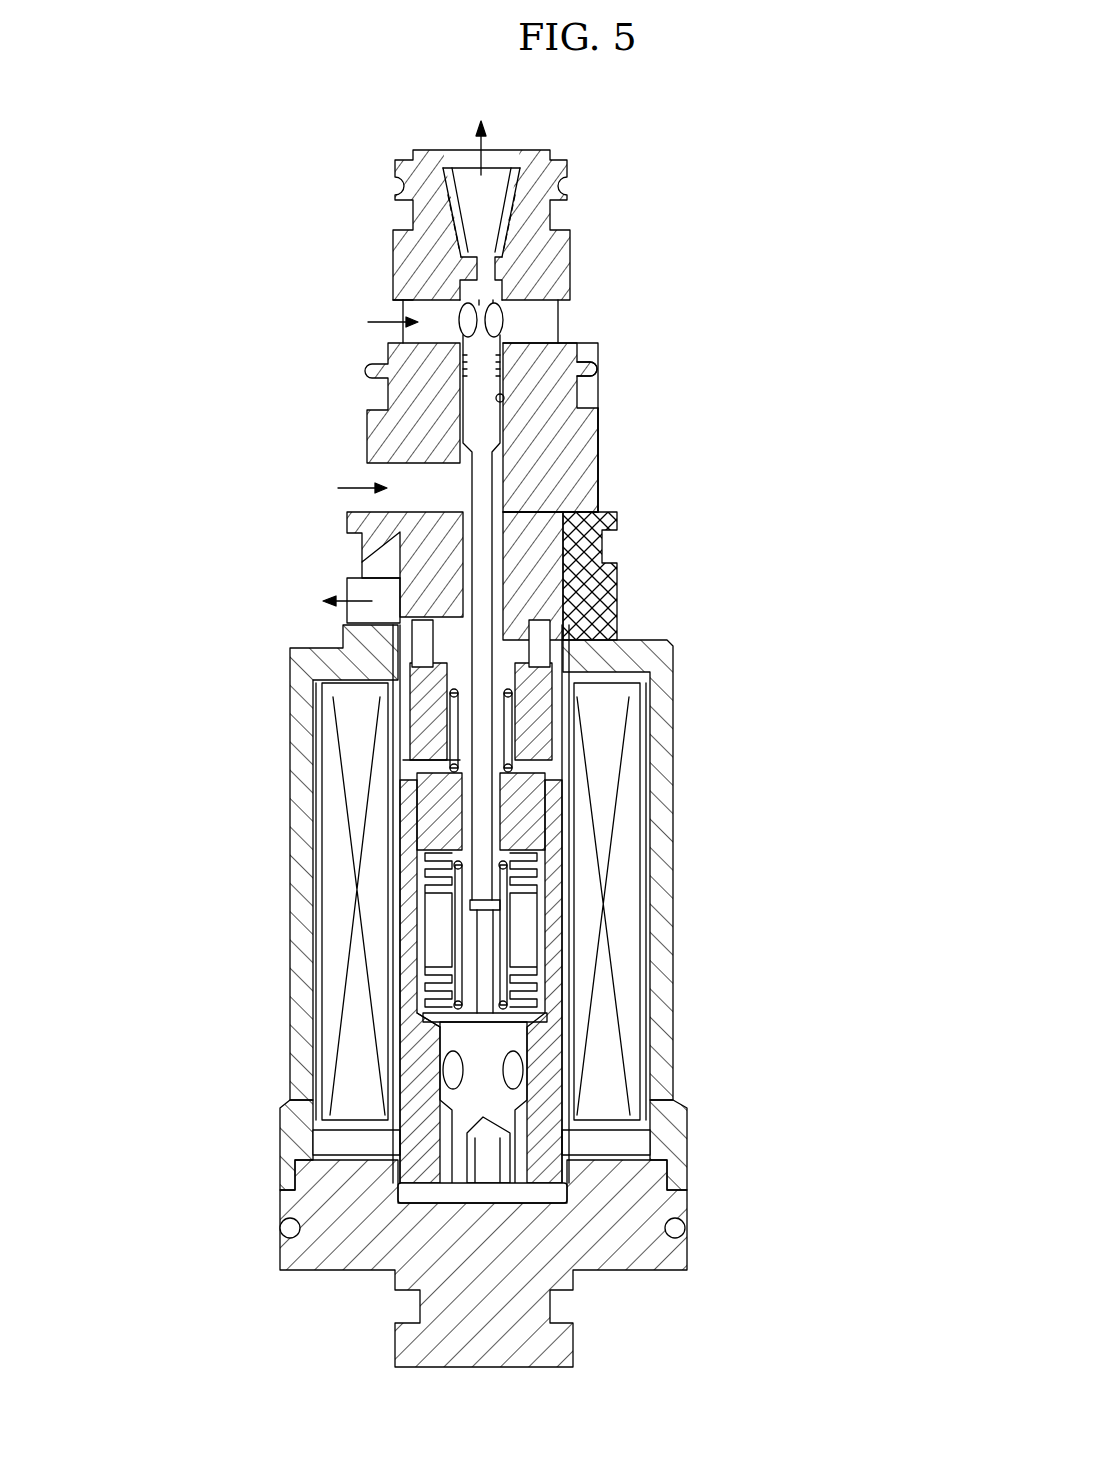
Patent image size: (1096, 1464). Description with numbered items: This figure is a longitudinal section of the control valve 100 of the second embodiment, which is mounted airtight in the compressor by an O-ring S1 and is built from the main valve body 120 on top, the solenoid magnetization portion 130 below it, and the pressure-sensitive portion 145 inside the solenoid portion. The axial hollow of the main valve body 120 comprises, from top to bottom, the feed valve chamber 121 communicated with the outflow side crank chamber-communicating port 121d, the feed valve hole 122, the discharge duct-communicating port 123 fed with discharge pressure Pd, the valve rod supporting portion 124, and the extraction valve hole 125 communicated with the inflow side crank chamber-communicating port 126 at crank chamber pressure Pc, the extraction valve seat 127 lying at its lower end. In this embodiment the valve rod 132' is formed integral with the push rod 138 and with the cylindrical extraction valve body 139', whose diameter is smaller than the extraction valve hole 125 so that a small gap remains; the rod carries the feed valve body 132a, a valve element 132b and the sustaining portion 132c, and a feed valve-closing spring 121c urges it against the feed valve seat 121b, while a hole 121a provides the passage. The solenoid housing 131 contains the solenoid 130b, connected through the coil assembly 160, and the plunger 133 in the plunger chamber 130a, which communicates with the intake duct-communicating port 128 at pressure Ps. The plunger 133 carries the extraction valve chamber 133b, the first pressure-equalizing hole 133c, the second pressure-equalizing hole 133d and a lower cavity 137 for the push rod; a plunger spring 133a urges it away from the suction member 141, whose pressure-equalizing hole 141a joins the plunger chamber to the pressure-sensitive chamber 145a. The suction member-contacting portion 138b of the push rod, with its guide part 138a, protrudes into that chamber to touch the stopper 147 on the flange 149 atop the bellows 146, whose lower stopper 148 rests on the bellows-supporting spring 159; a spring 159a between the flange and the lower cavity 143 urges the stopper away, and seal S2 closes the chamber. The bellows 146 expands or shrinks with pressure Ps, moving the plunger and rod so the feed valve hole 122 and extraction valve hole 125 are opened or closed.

The control valve 100 is at (604, 442).
The main valve body 120 is at (535, 366).
The feed valve chamber 121 is at (515, 256).
The valve hole 121a is at (442, 166).
The feed valve seat 121b is at (457, 283).
The feed valve-closing spring 121c is at (510, 208).
The outflow side crank chamber-communicating port 121d is at (500, 156).
The feed valve hole 122 is at (408, 240).
The discharge duct-communicating port 123 is at (548, 317).
The valve rod supporting portion 124 is at (547, 396).
The extraction valve hole 125 is at (560, 470).
The inflow side crank chamber-communicating port 126 is at (383, 460).
The extraction valve seat 127 is at (580, 548).
The intake duct-communicating port 128 is at (370, 590).
The solenoid magnetization portion 130 is at (288, 912).
The plunger chamber 130a is at (423, 764).
The solenoid 130b is at (355, 1072).
The solenoid housing 131 is at (300, 1030).
The valve rod 132' is at (381, 617).
The feed valve body 132a is at (486, 273).
The valve element 132b is at (468, 312).
The sustaining portion 132c is at (460, 387).
The plunger 133 is at (622, 660).
The plunger spring 133a is at (605, 696).
The extraction valve chamber 133b is at (535, 638).
The first pressure-equalizing hole 133c is at (420, 640).
The second pressure-equalizing hole 133d is at (425, 742).
The cavity 137 is at (410, 672).
The push rod 138 is at (512, 727).
The guide pin 138a is at (452, 652).
The suction member-contacting portion 138b is at (508, 790).
The extraction valve body 139' is at (630, 576).
The suction member 141 is at (527, 818).
The pressure-equalizing hole 141a is at (435, 800).
The lower cavity 143 is at (452, 860).
The pressure-sensitive portion 145 is at (547, 962).
The pressure-sensitive chamber 145a is at (530, 1022).
The bellows 146 is at (558, 938).
The stopper 147 is at (428, 935).
The stopper 148 is at (420, 965).
The flange 149 is at (455, 872).
The bellows-supporting spring 159 is at (540, 912).
The spring 159a is at (440, 845).
The coil assembly 160 is at (557, 1346).
The O-ring S1 is at (686, 1227).
The seal ring S2 is at (515, 1072).
The cooling medium pressure in the crank chamber Pc is at (395, 298).
The discharge pressure Pd is at (371, 321).
The cooling medium pressure Ps is at (325, 602).